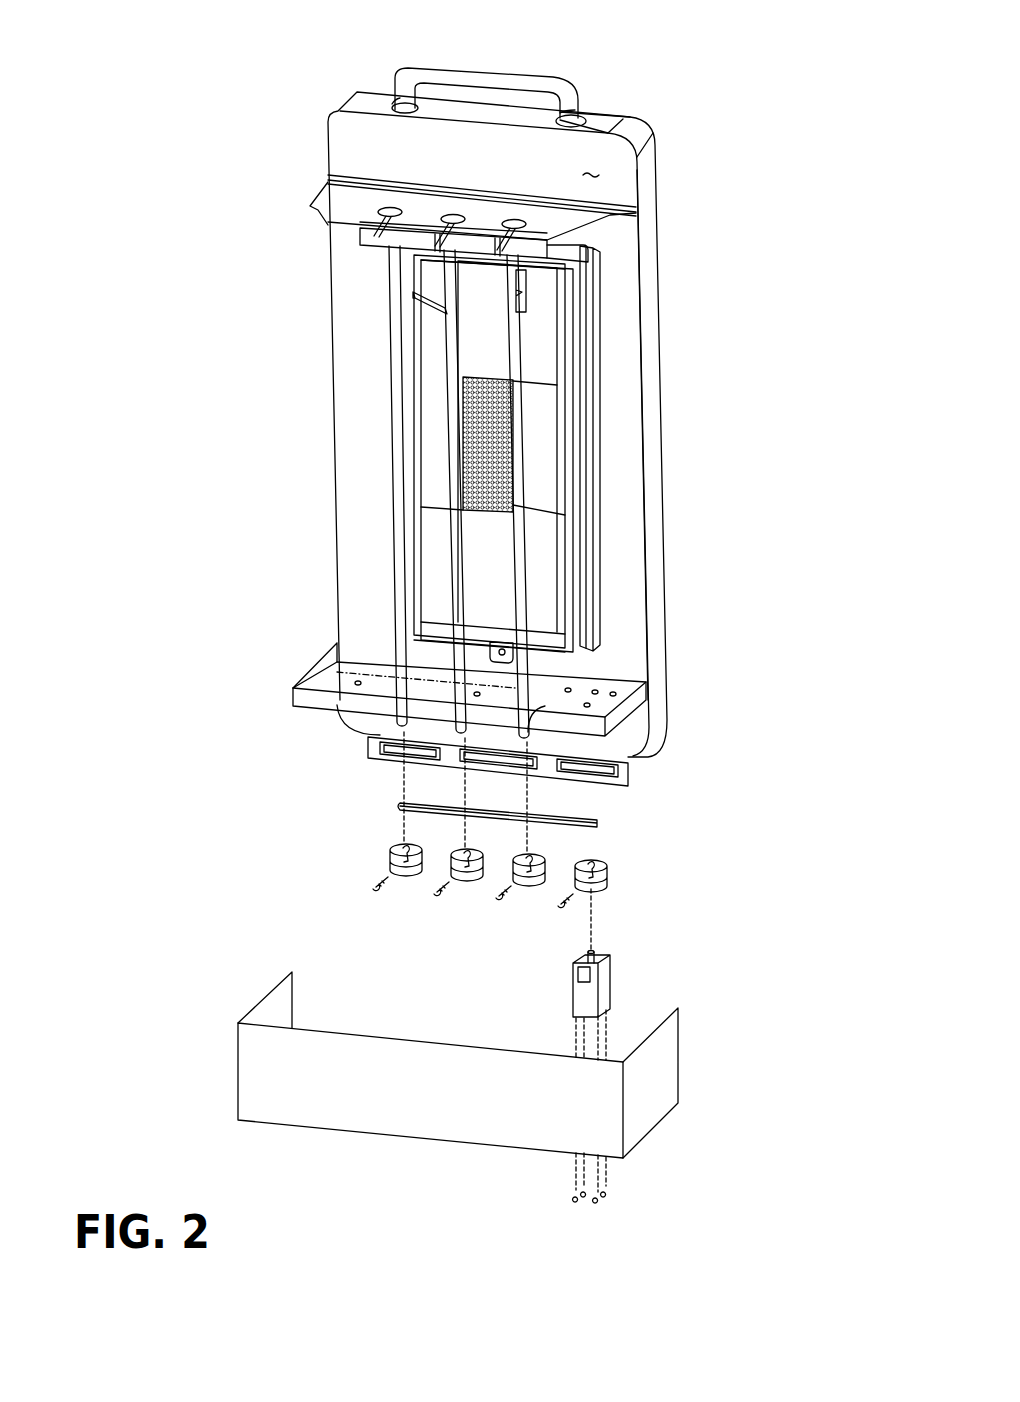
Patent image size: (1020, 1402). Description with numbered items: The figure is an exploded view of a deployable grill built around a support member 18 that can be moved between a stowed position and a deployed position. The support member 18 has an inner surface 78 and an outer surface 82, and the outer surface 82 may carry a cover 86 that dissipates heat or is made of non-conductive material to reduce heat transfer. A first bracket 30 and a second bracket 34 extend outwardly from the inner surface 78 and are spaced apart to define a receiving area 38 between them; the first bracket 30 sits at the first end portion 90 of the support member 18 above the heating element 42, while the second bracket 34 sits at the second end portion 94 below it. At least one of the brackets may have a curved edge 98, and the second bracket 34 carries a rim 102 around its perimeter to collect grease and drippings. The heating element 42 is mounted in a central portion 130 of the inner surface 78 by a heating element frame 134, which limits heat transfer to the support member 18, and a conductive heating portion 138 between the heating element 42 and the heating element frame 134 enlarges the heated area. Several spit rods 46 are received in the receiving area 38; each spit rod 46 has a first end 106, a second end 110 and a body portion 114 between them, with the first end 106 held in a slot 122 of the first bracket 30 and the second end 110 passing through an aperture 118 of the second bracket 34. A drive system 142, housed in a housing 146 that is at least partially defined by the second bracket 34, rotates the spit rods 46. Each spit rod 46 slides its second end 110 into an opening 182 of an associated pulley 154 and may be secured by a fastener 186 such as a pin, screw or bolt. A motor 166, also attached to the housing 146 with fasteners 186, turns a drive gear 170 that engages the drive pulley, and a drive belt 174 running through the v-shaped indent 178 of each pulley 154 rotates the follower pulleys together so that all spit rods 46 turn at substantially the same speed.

The support member 18 is at (360, 148).
The first bracket 30 is at (345, 207).
The second bracket 34 is at (600, 699).
The receiving area 38 is at (368, 435).
The heating element 42 is at (490, 457).
The spit rod 46 is at (517, 330).
The inner surface 78 is at (584, 148).
The outer surface 82 is at (615, 116).
The cover 86 is at (657, 210).
The first end portion 90 is at (383, 125).
The second end portion 94 is at (623, 745).
The curved edge 98 is at (357, 240).
The rim 102 is at (318, 673).
The first end 106 is at (515, 270).
The second end 110 is at (573, 690).
The body portion 114 is at (518, 490).
The apertures 118 is at (398, 714).
The slots 122 is at (432, 218).
The central portion 130 is at (465, 408).
The heating element frame 134 is at (587, 542).
The heating portion 138 is at (543, 533).
The drive system 142 is at (640, 853).
The housing 146 is at (480, 1100).
The pulley 154 is at (407, 872).
The motor 166 is at (585, 1003).
The drive gear 170 is at (597, 952).
The drive belt 174 is at (600, 821).
The v-shaped indent 178 is at (612, 881).
The opening 182 is at (403, 847).
The fastener 186 is at (373, 881).